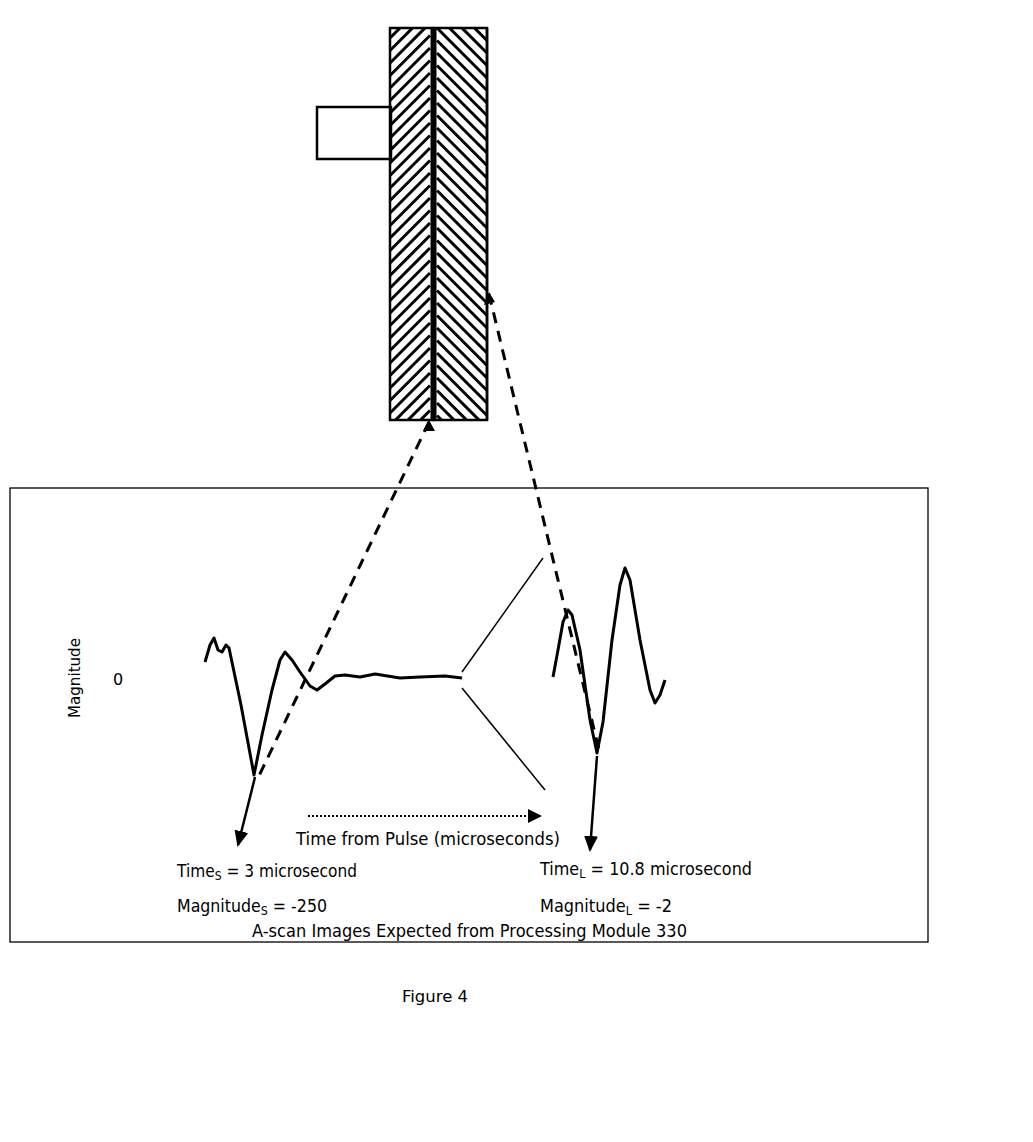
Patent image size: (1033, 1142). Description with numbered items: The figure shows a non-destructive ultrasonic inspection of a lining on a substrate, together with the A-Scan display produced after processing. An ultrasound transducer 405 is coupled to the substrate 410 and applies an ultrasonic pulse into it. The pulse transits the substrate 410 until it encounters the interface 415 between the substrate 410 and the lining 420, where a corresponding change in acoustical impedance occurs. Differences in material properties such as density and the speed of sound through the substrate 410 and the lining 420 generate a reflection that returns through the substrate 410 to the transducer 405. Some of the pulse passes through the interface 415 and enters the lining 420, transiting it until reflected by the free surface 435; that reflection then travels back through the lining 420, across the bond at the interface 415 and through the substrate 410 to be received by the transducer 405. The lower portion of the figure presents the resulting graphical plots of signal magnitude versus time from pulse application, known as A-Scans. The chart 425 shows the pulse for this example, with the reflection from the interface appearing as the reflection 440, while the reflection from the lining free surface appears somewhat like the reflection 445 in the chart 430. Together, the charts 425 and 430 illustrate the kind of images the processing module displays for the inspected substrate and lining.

The ultrasound transducer 405 is at (350, 160).
The substrate 410 is at (398, 298).
The interface 415 is at (436, 419).
The lining 420 is at (457, 180).
The chart 425 is at (317, 641).
The chart 430 is at (665, 631).
The free surface 435 is at (490, 253).
The reflection 440 is at (252, 773).
The reflection 445 is at (600, 757).